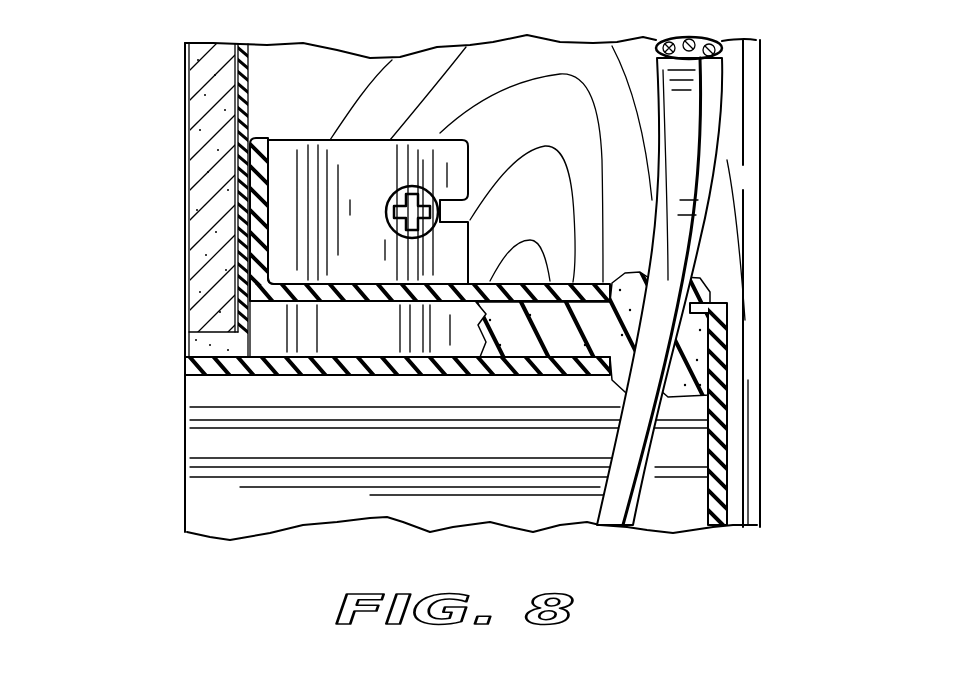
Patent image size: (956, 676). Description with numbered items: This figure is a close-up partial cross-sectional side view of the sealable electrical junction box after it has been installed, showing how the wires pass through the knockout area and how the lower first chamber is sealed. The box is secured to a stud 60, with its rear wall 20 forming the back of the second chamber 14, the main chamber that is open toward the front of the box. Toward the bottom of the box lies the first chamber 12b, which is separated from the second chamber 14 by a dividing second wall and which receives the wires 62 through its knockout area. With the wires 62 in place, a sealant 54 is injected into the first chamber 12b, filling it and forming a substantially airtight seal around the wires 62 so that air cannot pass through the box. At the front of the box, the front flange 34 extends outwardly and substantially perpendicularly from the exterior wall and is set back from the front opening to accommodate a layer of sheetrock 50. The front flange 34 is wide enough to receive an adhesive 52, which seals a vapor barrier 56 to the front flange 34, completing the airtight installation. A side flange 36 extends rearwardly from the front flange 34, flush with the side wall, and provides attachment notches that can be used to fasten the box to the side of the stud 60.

The sheetrock 50 is at (206, 189).
The vapor barrier 56 is at (252, 82).
The adhesive 52 is at (258, 132).
The front flange 34 is at (264, 224).
The side flange 36 is at (460, 177).
The stud 60 is at (560, 126).
The sealant 54 is at (700, 280).
The first chamber 12b is at (308, 340).
The second chamber 14 is at (232, 508).
The wires 62 is at (723, 123).
The rear wall 20 is at (727, 458).